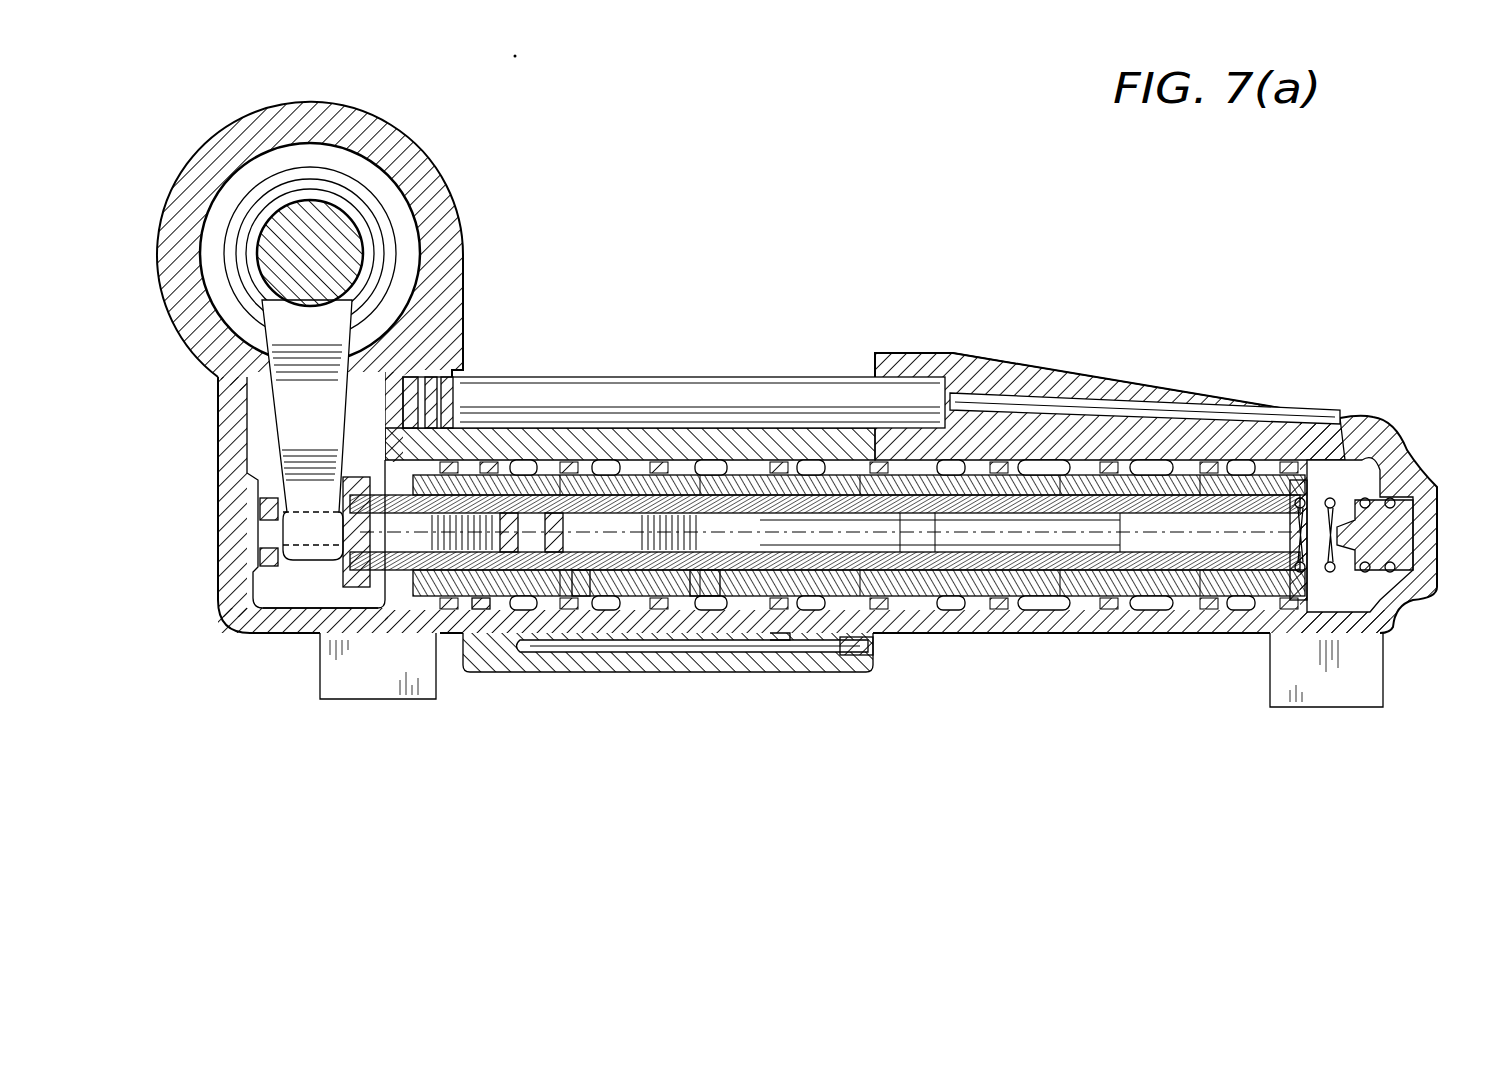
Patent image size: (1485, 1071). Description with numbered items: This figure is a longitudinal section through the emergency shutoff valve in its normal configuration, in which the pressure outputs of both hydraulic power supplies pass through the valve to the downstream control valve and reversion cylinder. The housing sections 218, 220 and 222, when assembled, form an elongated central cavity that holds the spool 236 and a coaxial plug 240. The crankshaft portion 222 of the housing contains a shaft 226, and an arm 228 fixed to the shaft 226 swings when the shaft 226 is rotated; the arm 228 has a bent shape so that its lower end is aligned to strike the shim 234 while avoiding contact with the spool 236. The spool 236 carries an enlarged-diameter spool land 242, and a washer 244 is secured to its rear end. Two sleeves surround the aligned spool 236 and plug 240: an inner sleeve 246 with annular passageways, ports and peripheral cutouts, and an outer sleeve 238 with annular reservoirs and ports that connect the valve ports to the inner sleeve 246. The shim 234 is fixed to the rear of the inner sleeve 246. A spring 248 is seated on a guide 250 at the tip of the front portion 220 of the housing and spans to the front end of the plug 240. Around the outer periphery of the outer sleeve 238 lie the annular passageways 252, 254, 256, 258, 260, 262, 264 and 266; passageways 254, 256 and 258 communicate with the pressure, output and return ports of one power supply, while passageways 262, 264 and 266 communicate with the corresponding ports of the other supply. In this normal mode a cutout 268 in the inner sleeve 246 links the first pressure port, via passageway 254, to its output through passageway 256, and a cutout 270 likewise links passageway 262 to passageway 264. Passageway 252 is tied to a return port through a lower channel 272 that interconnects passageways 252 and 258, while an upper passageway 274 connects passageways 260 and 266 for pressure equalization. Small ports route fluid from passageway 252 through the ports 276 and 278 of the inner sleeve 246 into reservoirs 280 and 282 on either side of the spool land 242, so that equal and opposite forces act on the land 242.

The housing section 218 is at (585, 672).
The housing section 220 is at (1065, 392).
The crankshaft portion 222 is at (422, 218).
The shaft 226 is at (355, 248).
The arm 228 is at (268, 432).
The shim 234 is at (350, 572).
The spool 236 is at (580, 600).
The outer sleeve 238 is at (445, 640).
The plug 240 is at (1000, 540).
The spool land 242 is at (560, 525).
The washer 244 is at (260, 573).
The inner sleeve 246 is at (393, 580).
The spring 248 is at (1338, 488).
The guide 250 is at (1412, 525).
The annular passageway 252 is at (525, 470).
The annular passageway 254 is at (622, 492).
The annular passageway 256 is at (720, 468).
The annular passageway 258 is at (812, 468).
The annular passageway 260 is at (950, 468).
The annular passageway 262 is at (1045, 468).
The annular passageway 264 is at (1150, 468).
The annular passageway 266 is at (1242, 468).
The cutout 268 is at (702, 620).
The cutout 270 is at (1115, 570).
The lower channel 272 is at (780, 640).
The upper passageway 274 is at (1000, 412).
The port 276 is at (480, 612).
The port 278 is at (590, 655).
The reservoir 280 is at (505, 510).
The reservoir 282 is at (595, 480).